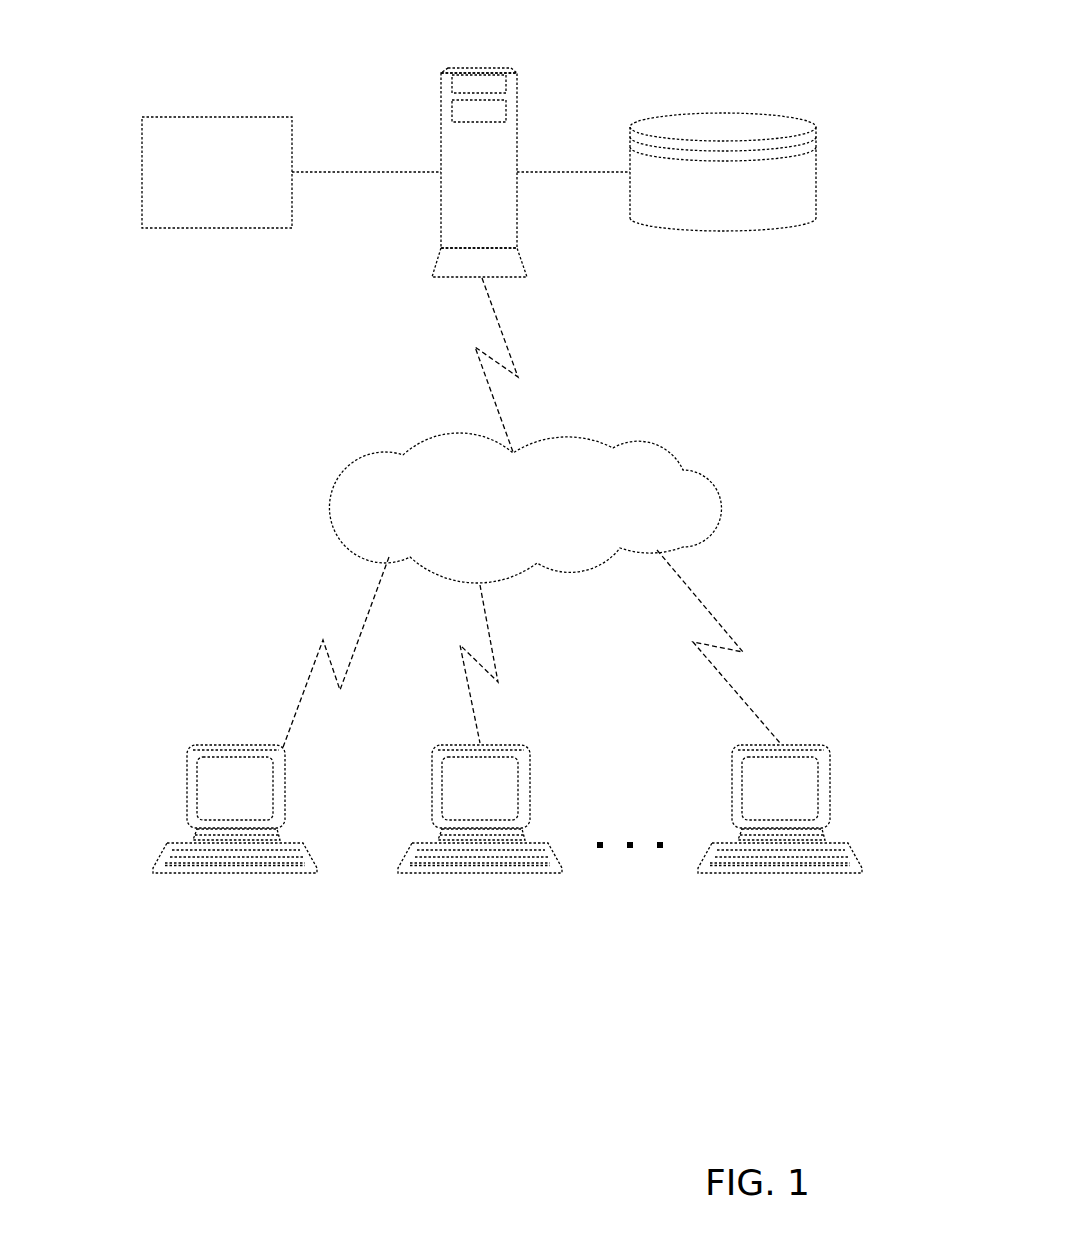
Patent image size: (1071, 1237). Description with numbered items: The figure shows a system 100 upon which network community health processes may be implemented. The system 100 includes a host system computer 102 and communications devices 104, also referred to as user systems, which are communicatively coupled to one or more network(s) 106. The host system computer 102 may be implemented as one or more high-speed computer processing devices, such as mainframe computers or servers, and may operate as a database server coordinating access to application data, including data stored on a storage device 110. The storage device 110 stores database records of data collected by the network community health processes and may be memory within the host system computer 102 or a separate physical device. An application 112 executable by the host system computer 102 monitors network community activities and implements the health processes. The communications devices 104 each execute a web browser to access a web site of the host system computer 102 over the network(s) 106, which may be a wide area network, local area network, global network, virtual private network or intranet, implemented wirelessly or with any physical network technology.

The system 100 is at (95, 100).
The host system computer 102 is at (517, 95).
The communications devices 104 is at (857, 900).
The network(s) 106 is at (603, 517).
The storage device 110 is at (758, 113).
The application 112 is at (200, 197).